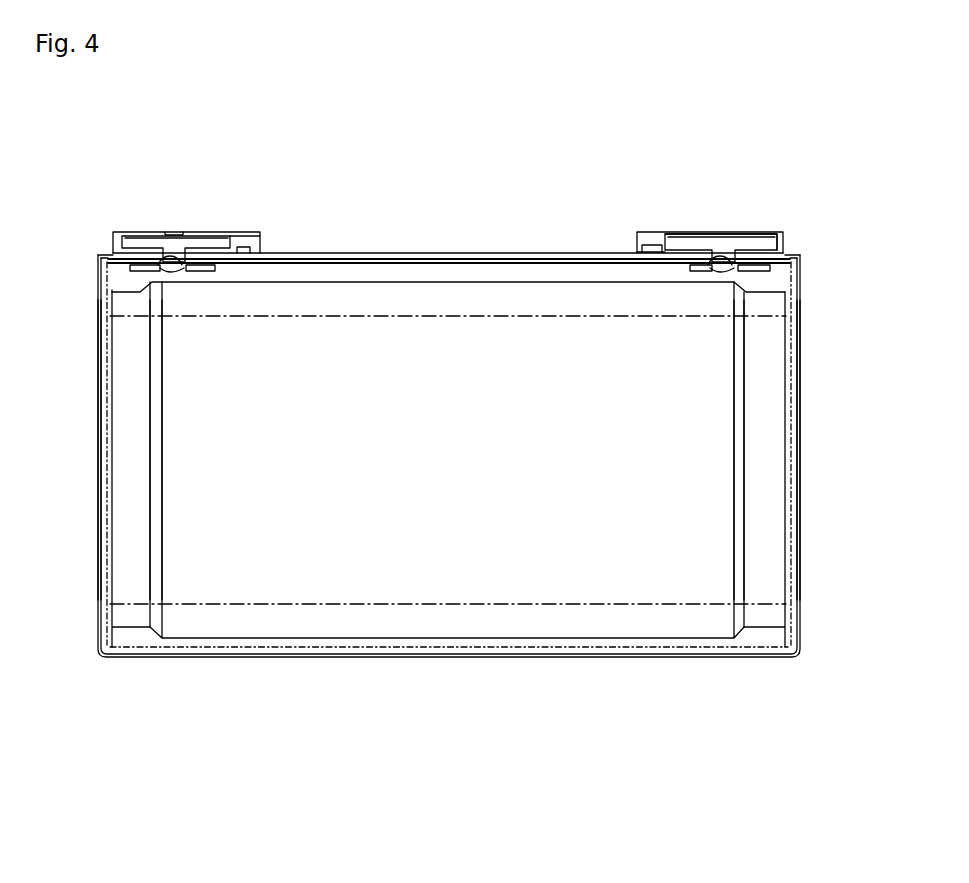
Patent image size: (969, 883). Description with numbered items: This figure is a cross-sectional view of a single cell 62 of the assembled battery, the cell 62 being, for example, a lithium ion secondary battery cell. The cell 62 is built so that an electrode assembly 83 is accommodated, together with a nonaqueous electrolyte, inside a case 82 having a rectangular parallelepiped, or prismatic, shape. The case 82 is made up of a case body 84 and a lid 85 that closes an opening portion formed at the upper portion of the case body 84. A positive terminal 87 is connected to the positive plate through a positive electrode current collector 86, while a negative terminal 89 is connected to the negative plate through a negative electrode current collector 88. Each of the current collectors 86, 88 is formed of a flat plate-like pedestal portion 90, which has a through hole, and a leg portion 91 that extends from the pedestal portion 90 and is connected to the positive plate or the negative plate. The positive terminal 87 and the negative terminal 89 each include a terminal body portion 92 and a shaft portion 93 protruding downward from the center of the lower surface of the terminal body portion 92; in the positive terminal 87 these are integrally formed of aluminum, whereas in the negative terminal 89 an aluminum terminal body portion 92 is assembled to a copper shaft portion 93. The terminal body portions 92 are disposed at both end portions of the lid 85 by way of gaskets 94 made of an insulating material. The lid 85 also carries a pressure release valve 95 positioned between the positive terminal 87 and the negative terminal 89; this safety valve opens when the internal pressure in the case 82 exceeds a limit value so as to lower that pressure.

The cell 62 is at (108, 677).
The case 82 is at (121, 170).
The electrode assembly 83 is at (275, 582).
The case body 84 is at (97, 272).
The lid 85 is at (103, 253).
The positive electrode current collector 86 is at (130, 432).
The positive terminal 87 is at (148, 233).
The negative electrode current collector 88 is at (768, 447).
The negative terminal 89 is at (762, 238).
The pedestal portion 90 is at (197, 273).
The leg portion 91 is at (146, 500).
The terminal body portion 92 is at (208, 238).
The shaft portion 93 is at (168, 268).
The gasket 94 is at (246, 238).
The pressure release valve 95 is at (451, 252).